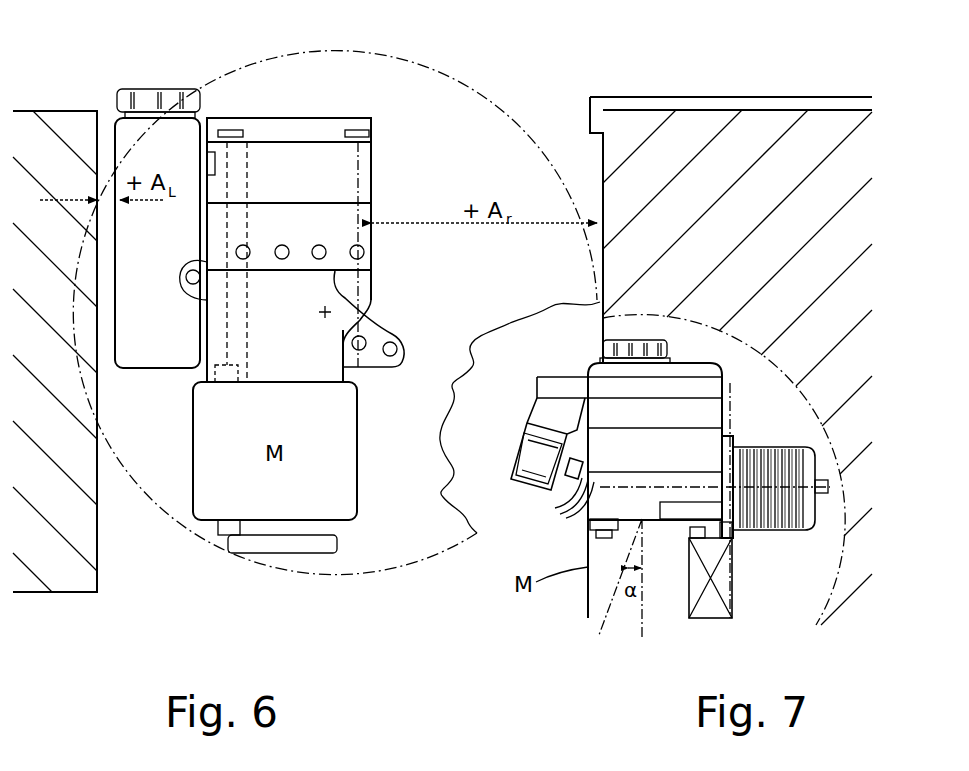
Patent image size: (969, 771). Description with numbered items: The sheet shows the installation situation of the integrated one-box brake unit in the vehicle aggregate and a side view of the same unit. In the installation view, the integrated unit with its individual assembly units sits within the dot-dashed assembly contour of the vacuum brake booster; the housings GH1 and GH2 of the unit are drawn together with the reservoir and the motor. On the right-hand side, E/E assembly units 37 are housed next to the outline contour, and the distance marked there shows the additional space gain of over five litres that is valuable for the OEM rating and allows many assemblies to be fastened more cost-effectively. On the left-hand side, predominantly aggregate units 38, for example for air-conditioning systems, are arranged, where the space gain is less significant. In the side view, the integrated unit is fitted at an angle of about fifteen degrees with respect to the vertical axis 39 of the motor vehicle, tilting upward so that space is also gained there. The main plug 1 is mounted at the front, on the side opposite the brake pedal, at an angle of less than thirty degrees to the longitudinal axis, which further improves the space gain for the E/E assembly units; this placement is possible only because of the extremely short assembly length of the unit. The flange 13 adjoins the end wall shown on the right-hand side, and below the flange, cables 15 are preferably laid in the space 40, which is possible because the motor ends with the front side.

In FIG. 6, the aggregate units 38 is at (47, 147).
In FIG. 7, the E/E assembly units 37 is at (765, 135).
In FIG. 7, the vertical axis 39 is at (733, 403).
In FIG. 7, the mounting flange 13 is at (735, 440).
In FIG. 7, the main plug 1 is at (518, 462).
In FIG. 7, the cable connection 15 is at (572, 500).
In FIG. 7, the space 40 is at (713, 600).
In FIG. 6, the first housing (hydraulic unit) GH1 is at (332, 323).
In FIG. 6, the second housing (control unit) GH2 is at (372, 208).